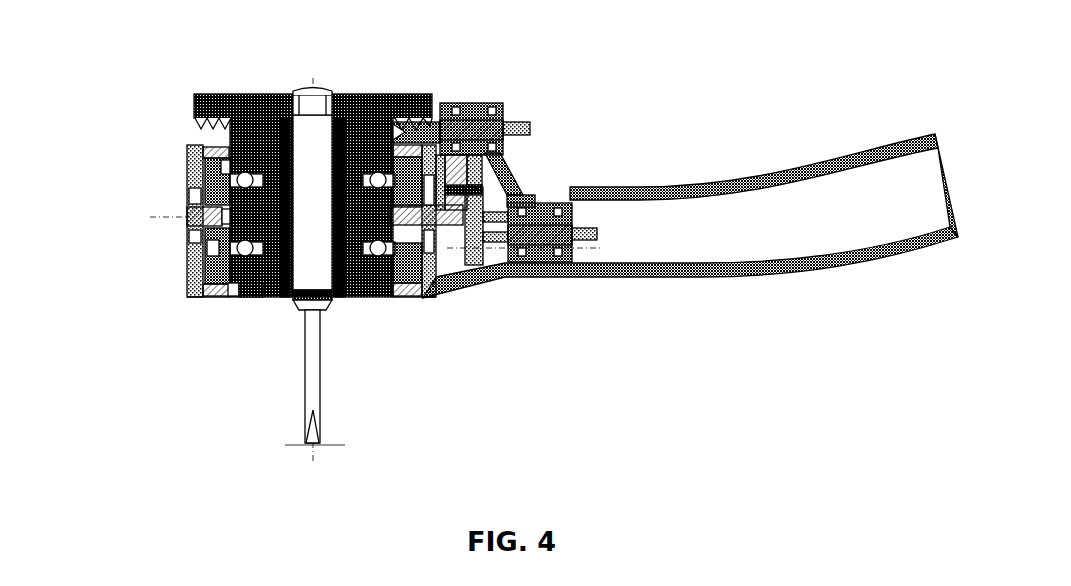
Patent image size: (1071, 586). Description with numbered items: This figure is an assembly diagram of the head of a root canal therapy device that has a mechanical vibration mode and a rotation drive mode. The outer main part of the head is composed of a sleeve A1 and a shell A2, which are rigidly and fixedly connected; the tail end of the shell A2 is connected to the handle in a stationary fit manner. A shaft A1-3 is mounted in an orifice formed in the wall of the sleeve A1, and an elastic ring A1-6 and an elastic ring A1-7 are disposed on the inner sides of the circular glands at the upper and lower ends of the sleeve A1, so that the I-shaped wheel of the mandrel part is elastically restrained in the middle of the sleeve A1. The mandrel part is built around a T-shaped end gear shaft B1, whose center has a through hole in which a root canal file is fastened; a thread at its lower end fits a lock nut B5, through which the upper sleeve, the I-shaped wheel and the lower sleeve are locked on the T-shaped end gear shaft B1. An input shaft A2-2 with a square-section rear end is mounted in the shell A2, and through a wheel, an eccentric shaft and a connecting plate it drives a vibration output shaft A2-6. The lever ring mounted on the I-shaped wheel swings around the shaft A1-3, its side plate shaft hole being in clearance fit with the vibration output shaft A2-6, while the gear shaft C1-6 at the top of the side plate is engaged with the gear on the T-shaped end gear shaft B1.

The T-shaped end gear shaft B1 is at (352, 113).
The sleeve A1 is at (192, 180).
The elastic ring A1-6 is at (217, 167).
The shaft A1-3 is at (193, 217).
The elastic ring A1-7 is at (215, 275).
The lock nut B5 is at (257, 285).
The gear shaft C1-6 is at (462, 127).
The vibration output shaft A2-6 is at (458, 188).
The input shaft A2-2 is at (535, 232).
The shell A2 is at (735, 188).